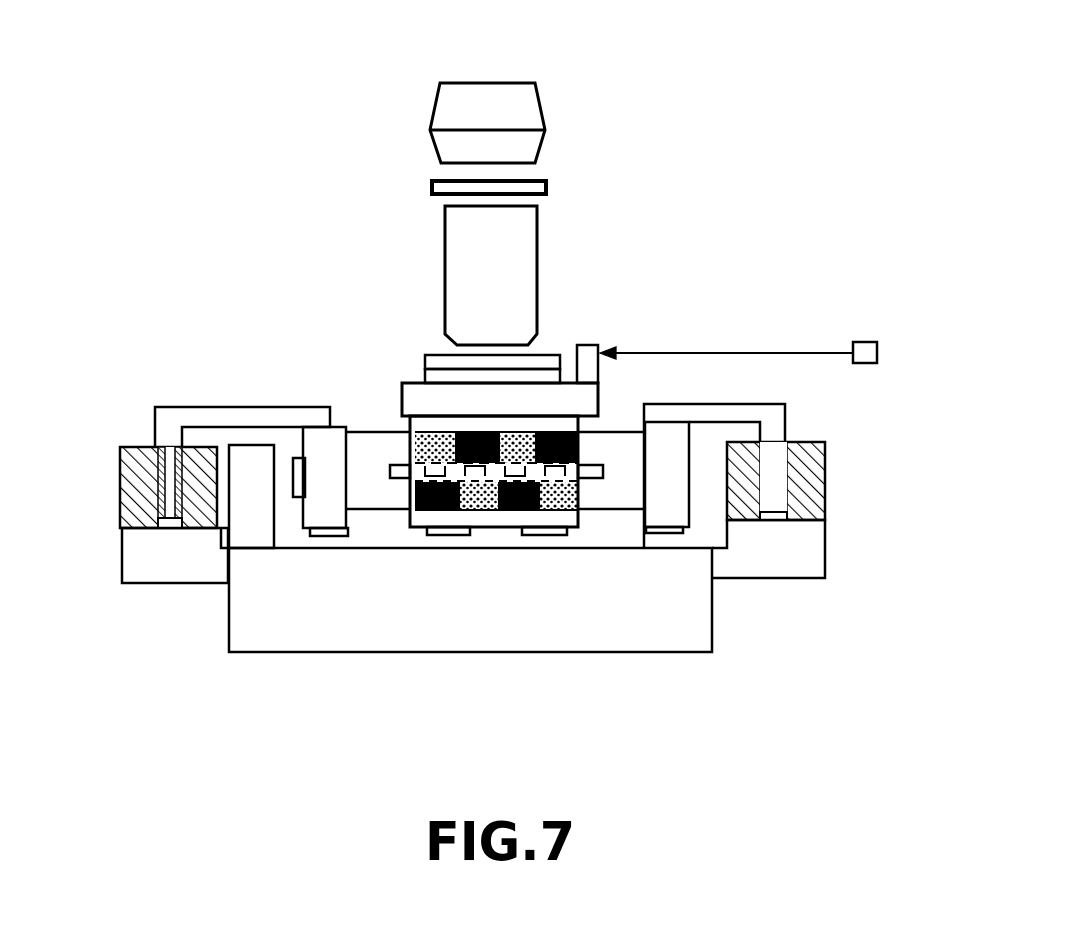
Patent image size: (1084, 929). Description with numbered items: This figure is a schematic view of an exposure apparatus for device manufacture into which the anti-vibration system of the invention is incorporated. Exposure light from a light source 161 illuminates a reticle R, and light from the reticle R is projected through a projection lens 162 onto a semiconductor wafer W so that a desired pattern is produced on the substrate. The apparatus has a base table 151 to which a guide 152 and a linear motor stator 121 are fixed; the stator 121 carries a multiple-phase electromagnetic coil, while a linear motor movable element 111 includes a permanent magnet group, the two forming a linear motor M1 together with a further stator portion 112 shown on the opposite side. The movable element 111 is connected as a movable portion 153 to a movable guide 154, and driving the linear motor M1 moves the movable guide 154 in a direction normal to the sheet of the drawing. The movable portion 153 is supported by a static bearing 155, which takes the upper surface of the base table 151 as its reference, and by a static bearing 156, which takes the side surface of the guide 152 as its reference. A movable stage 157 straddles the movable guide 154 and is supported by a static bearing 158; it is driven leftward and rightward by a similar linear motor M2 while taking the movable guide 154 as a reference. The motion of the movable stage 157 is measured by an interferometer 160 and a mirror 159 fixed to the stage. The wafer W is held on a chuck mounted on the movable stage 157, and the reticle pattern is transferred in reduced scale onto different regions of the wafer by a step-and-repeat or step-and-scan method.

The light source 161 is at (452, 80).
The reticle R is at (552, 188).
The projection lens 162 is at (538, 226).
The semiconductor wafer W is at (440, 352).
The movable stage 157 is at (413, 392).
The mirror 159 is at (587, 344).
The interferometer 160 is at (864, 340).
The linear motor M2 is at (580, 443).
The static bearing 158 is at (530, 536).
The movable guide 154 is at (382, 450).
The movable portion 153 is at (318, 440).
The static bearing 156 is at (292, 490).
The linear motor M1 is at (167, 333).
The linear motor stator 121 is at (134, 447).
The linear motor movable element 111 is at (170, 455).
The stator 112 is at (812, 452).
The static bearing 155 is at (660, 534).
The guide 152 is at (229, 548).
The base table 151 is at (358, 632).